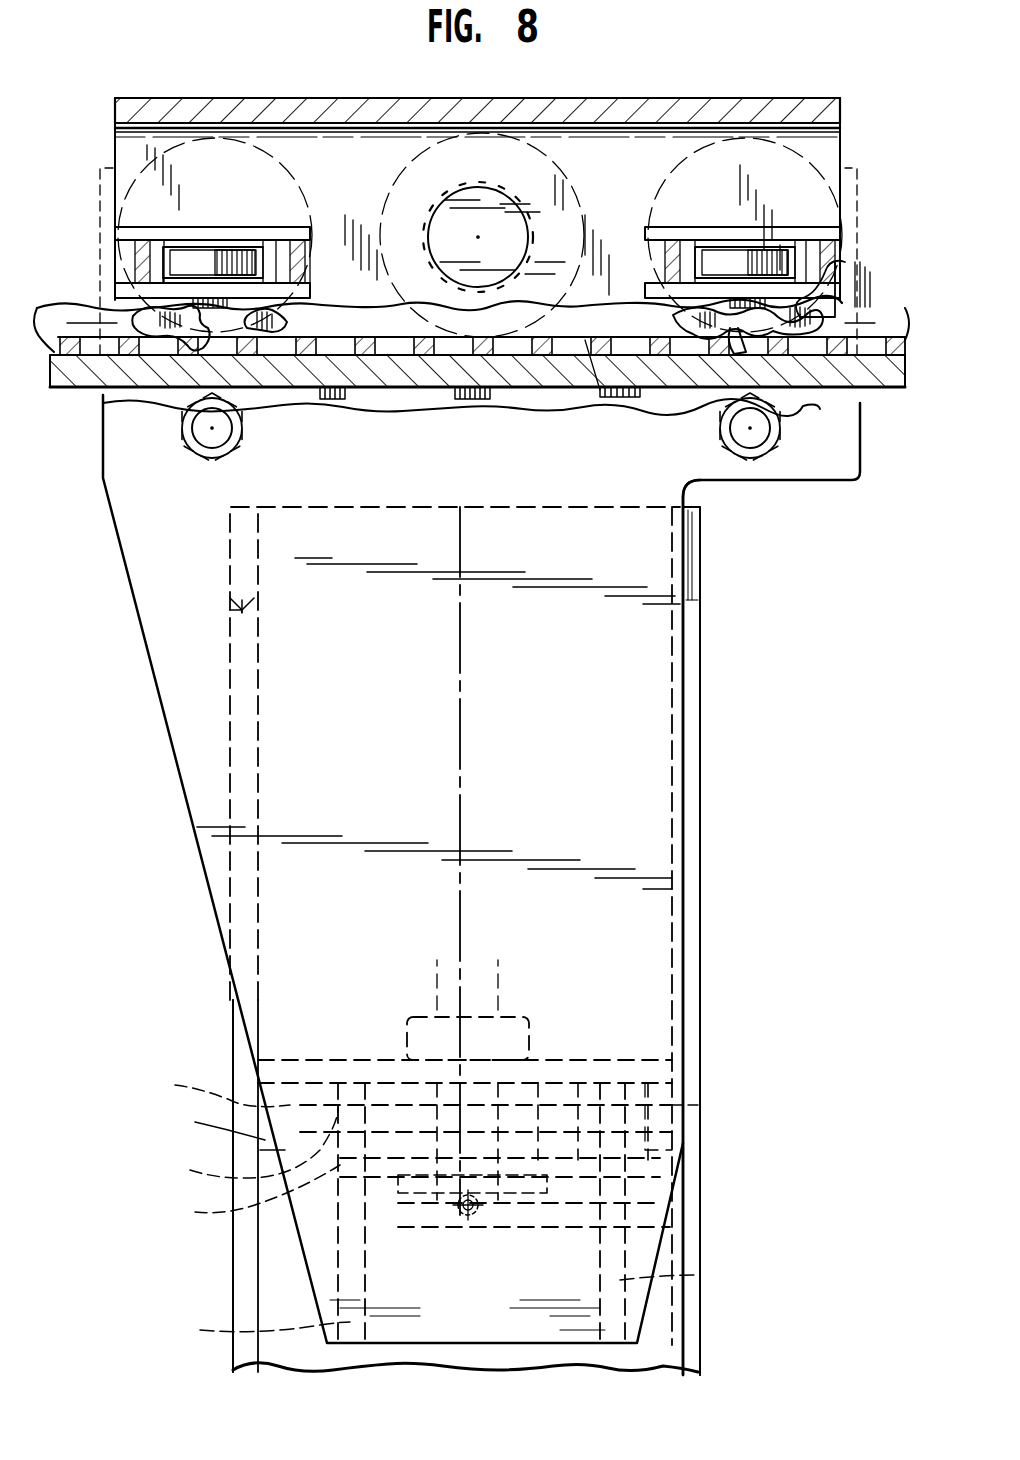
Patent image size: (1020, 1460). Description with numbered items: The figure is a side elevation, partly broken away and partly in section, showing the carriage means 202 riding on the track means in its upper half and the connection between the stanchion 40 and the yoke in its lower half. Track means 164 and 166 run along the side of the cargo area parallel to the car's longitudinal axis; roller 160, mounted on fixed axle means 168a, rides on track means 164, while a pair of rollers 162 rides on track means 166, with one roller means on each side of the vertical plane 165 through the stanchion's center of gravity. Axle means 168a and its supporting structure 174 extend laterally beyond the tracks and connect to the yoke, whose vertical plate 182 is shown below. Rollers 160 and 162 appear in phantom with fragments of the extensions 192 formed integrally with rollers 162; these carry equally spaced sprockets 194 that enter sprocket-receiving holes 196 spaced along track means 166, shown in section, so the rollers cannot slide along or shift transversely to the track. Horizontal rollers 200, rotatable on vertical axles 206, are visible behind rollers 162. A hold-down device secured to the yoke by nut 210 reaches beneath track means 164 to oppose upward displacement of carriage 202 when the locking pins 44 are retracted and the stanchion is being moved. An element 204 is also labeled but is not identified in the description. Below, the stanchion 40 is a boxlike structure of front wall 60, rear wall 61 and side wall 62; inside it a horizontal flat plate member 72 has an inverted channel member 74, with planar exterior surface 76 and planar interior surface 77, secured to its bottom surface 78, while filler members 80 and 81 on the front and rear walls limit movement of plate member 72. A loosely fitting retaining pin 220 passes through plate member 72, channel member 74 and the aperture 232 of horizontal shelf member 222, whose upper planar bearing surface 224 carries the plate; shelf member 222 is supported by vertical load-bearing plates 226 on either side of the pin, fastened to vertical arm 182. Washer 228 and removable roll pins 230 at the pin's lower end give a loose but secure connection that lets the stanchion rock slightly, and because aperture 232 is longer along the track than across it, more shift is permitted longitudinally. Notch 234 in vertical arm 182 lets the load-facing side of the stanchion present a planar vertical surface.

The supporting structure 174 is at (355, 100).
The carriage means 202 is at (858, 129).
The track means 166 is at (40, 306).
The rollers 162 is at (125, 148).
The roller 160 is at (382, 177).
The axle means 168a is at (640, 199).
The vertical axles 206 is at (222, 247).
The horizontal rollers 200 is at (180, 258).
The bracket side 204 is at (360, 268).
The extension 192 is at (845, 300).
The track means 164 is at (70, 382).
The locking pins 44 is at (330, 410).
The sprockets 194 is at (205, 340).
The sprocket-receiving holes 196 is at (590, 340).
The nut 210 is at (245, 440).
The stanchion 40 is at (719, 937).
The front wall 60 is at (245, 1290).
The rear wall 61 is at (700, 997).
The side wall 62 is at (690, 860).
The notch 234 is at (772, 482).
The aperture 232 is at (230, 600).
The vertical plane 165 is at (460, 686).
The vertical plate 182 is at (596, 792).
The retaining pin 220 is at (440, 1015).
The horizontal flat plate member 72 is at (285, 1060).
The planar exterior surface 76 is at (395, 1060).
The planar interior surface 77 is at (565, 1090).
The channel member 74 is at (605, 1080).
The bottom surface 78 is at (185, 1086).
The filler member 80 is at (211, 1124).
The bearing surface 224 is at (245, 1143).
The horizontal shelf member 222 is at (245, 1193).
The filler member 81 is at (710, 1112).
The washer 228 is at (556, 1215).
The roll pins 230 is at (465, 1218).
The vertical load-bearing plates 226 is at (200, 1331).